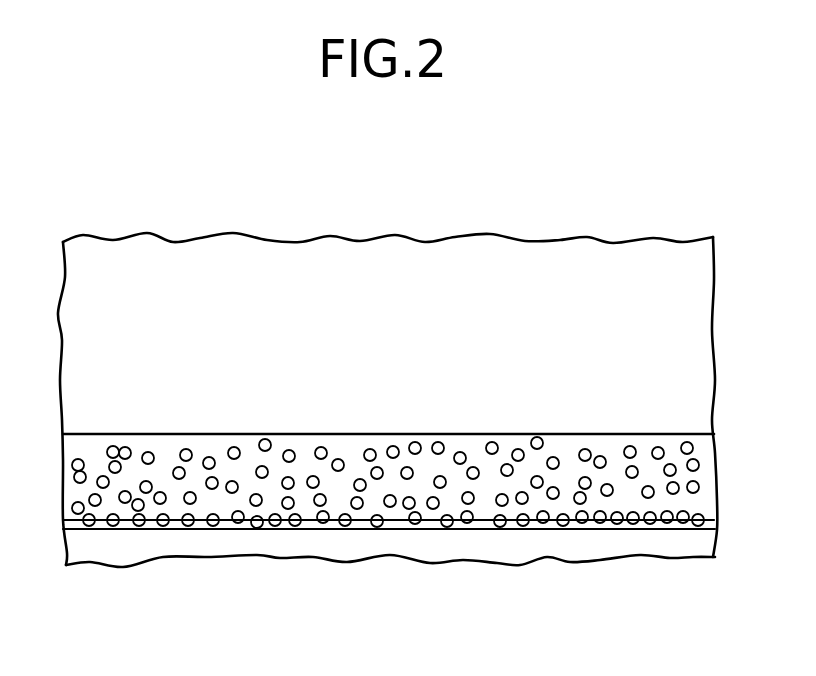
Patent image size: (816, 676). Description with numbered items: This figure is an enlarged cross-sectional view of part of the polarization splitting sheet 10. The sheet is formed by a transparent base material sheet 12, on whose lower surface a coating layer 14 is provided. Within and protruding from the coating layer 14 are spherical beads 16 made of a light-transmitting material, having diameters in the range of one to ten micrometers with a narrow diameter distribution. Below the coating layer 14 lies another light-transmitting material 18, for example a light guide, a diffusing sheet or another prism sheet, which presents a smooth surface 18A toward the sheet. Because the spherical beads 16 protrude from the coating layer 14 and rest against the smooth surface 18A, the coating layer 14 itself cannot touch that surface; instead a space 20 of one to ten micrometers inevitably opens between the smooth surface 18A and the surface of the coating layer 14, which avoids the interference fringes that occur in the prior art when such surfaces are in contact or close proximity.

The polarization splitting sheet 10 is at (571, 219).
The transparent base material sheet 12 is at (216, 254).
The coating layer 14 is at (723, 432).
The spherical beads 16 is at (502, 530).
The light-transmitting material 18 is at (663, 545).
The smooth surface 18A is at (313, 530).
The space 20 is at (78, 523).